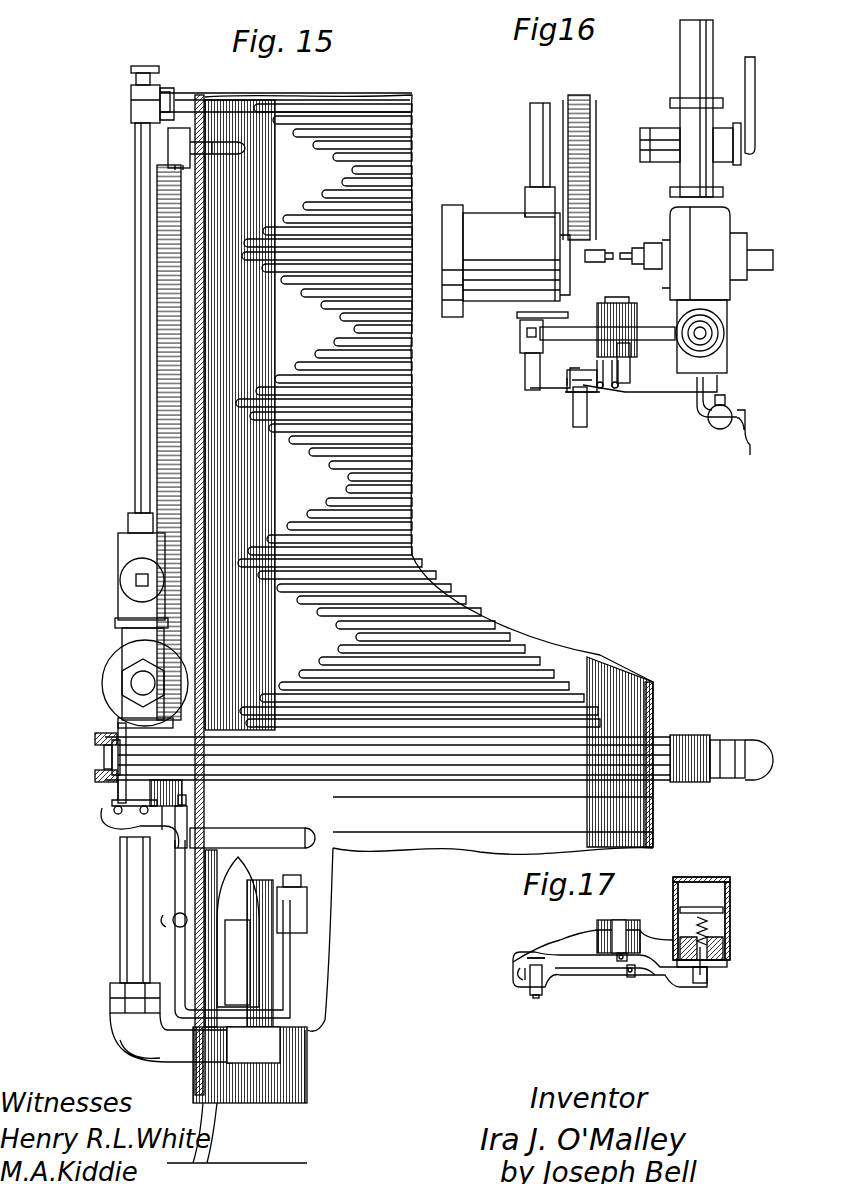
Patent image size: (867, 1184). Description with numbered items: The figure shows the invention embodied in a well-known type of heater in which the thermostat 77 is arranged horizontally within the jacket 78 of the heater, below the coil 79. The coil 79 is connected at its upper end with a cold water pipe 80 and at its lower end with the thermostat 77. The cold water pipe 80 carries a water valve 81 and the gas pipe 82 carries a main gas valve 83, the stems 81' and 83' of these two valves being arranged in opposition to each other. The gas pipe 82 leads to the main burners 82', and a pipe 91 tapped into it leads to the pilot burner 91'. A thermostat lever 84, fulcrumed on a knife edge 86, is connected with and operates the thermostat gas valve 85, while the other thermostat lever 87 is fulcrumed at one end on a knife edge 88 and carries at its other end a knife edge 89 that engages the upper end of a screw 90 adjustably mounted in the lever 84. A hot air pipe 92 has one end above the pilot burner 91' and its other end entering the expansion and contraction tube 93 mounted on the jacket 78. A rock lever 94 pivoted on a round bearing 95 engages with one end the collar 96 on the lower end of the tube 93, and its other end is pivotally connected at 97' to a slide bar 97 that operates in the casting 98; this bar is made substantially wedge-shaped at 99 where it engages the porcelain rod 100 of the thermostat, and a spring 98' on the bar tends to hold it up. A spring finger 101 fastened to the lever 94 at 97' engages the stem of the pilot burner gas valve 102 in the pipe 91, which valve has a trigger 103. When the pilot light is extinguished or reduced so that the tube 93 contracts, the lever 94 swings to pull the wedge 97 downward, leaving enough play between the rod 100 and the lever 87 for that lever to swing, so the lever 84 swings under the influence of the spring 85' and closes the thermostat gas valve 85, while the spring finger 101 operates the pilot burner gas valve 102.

In FIG. 15, the thermostat 77 is at (450, 781).
In FIG. 17, the thermostat 77 is at (600, 925).
In FIG. 15, the jacket 78 is at (208, 378).
In FIG. 15, the coil 79 is at (292, 290).
In FIG. 15, the cold water pipe 80 is at (135, 318).
In FIG. 16, the cold water pipe 80 is at (530, 143).
In FIG. 15, the water valve 81 is at (121, 683).
In FIG. 16, the water valve 81 is at (506, 261).
In FIG. 16, the stem of the water valve 81' is at (604, 241).
In FIG. 15, the gas pipe 82 is at (153, 950).
In FIG. 16, the gas pipe 82 is at (697, 108).
In FIG. 15, the main burners 82' is at (238, 932).
In FIG. 15, the main gas valve 83 is at (109, 683).
In FIG. 16, the main gas valve 83 is at (717, 253).
In FIG. 16, the stem of the main gas valve 83' is at (641, 243).
In FIG. 15, the thermostat lever 84 is at (112, 762).
In FIG. 16, the thermostat lever 84 is at (662, 342).
In FIG. 17, the thermostat lever 84 is at (625, 982).
In FIG. 16, the thermostat gas valve 85 is at (722, 336).
In FIG. 17, the thermostat gas valve 85 is at (721, 930).
In FIG. 17, the spring 85' is at (726, 941).
In FIG. 16, the knife edge 86 is at (540, 348).
In FIG. 17, the knife edge 86 is at (520, 985).
In FIG. 17, the thermostat lever 87 is at (570, 958).
In FIG. 16, the knife edge 88 is at (632, 363).
In FIG. 17, the knife edge 88 is at (637, 982).
In FIG. 17, the knife edge 89 is at (528, 962).
In FIG. 16, the screw 90 is at (519, 338).
In FIG. 17, the screw 90 is at (538, 997).
In FIG. 15, the pipe 91 is at (189, 929).
In FIG. 15, the pilot burner 91' is at (317, 904).
In FIG. 15, the hot air pipe 92 is at (270, 842).
In FIG. 16, the hot air pipe 92 is at (585, 427).
In FIG. 15, the expansion and contraction tube 93 is at (156, 377).
In FIG. 16, the expansion and contraction tube 93 is at (592, 118).
In FIG. 15, the rock lever 94 is at (112, 801).
In FIG. 16, the rock lever 94 is at (570, 390).
In FIG. 15, the round bearing 95 is at (130, 832).
In FIG. 16, the round bearing 95 is at (580, 393).
In FIG. 16, the collar 96 is at (530, 388).
In FIG. 15, the slide bar 97 is at (68, 771).
In FIG. 16, the slide bar 97 is at (602, 392).
In FIG. 17, the slide bar 97 is at (602, 993).
In FIG. 15, the pivotal connection 97' is at (96, 812).
In FIG. 16, the pivotal connection 97' is at (622, 398).
In FIG. 17, the pivotal connection 97' is at (619, 998).
In FIG. 15, the casting 98 is at (145, 770).
In FIG. 16, the casting 98 is at (635, 327).
In FIG. 17, the casting 98 is at (594, 983).
In FIG. 15, the spring 98' is at (112, 717).
In FIG. 15, the wedge-shaped portion 99 is at (104, 756).
In FIG. 15, the porcelain rod 100 is at (370, 757).
In FIG. 17, the porcelain rod 100 is at (620, 925).
In FIG. 15, the spring finger 101 is at (105, 818).
In FIG. 16, the spring finger 101 is at (722, 387).
In FIG. 15, the pilot burner gas valve 102 is at (188, 823).
In FIG. 16, the pilot burner gas valve 102 is at (717, 428).
In FIG. 15, the trigger 103 is at (165, 838).
In FIG. 16, the trigger 103 is at (745, 410).